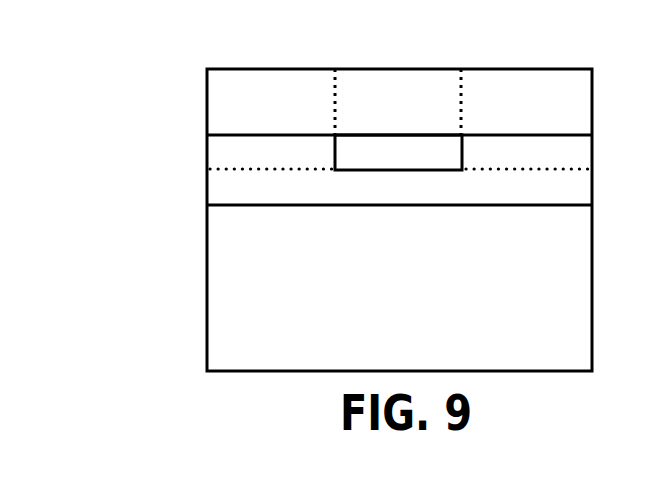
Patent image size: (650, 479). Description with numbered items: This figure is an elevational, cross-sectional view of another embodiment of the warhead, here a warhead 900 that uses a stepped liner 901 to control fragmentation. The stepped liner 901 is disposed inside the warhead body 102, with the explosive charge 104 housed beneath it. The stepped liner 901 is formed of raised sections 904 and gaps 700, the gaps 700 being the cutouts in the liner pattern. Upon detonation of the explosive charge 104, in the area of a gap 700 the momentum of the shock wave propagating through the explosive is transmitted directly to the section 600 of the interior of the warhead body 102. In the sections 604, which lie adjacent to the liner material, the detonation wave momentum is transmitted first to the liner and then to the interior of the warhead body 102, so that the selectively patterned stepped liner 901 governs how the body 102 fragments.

The warhead 900 is at (406, 32).
The warhead body 102 is at (205, 98).
The sections 604 is at (243, 89).
The sections 600 is at (418, 92).
The stepped liner 901 is at (176, 163).
The gaps 700 is at (415, 163).
The raised sections 904 is at (288, 163).
The explosive charge 104 is at (415, 296).